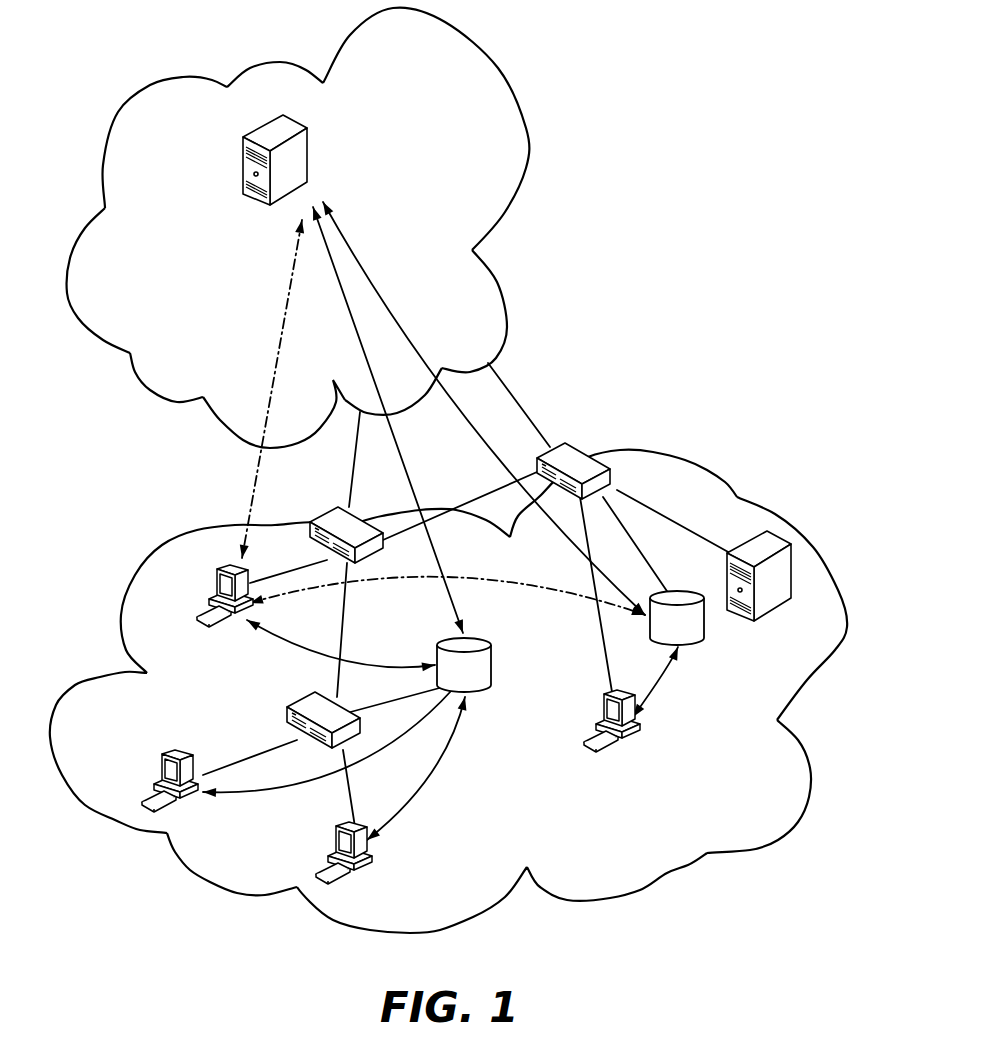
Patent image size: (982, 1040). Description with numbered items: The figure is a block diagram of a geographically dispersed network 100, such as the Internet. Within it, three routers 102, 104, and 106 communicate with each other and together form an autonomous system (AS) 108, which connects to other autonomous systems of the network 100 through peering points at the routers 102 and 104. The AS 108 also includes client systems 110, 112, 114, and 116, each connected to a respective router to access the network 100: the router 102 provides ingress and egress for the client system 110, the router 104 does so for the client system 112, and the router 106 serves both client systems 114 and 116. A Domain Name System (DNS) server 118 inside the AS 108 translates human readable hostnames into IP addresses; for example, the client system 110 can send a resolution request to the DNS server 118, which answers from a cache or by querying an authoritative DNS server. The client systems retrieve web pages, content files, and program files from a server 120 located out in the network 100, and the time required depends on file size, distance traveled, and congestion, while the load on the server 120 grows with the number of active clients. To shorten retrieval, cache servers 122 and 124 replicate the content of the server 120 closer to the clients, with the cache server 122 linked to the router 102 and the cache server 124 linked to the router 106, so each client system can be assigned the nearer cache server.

The network 100 is at (598, 187).
The router 102 is at (582, 457).
The router 104 is at (323, 507).
The router 106 is at (288, 712).
The autonomous system 108 is at (710, 470).
The client system 110 is at (637, 720).
The client system 112 is at (207, 621).
The client system 114 is at (165, 753).
The client system 116 is at (337, 827).
The Domain Name System (DNS) server 118 is at (760, 620).
The server 120 is at (256, 143).
The cache server 122 is at (705, 640).
The cache server 124 is at (492, 663).